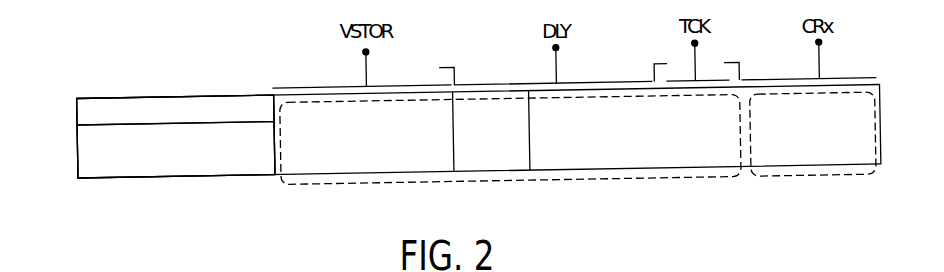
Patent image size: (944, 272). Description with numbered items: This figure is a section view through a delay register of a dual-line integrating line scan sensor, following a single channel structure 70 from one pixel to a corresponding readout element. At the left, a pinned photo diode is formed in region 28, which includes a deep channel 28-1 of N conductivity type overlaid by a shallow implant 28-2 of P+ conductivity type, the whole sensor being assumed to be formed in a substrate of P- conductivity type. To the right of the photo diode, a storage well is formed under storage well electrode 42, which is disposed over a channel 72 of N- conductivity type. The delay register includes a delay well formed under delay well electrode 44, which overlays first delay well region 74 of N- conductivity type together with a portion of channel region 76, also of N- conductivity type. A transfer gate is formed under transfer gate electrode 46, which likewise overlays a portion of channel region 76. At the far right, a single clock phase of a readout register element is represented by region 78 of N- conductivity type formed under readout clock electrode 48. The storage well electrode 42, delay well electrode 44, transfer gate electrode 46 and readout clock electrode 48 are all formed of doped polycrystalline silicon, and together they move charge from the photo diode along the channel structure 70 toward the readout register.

The region 28 is at (273, 85).
The shallow implant 28-2 is at (87, 113).
The deep channel 28-1 is at (88, 163).
The storage well electrode 42 is at (338, 83).
The delay well electrode 44 is at (515, 83).
The transfer gate electrode 46 is at (683, 70).
The readout clock electrode 48 is at (792, 72).
The first channel structure 70 is at (700, 181).
The channel 72 is at (370, 161).
The first delay well region 74 is at (490, 160).
The channel region 76 is at (630, 156).
The region 78 is at (797, 153).